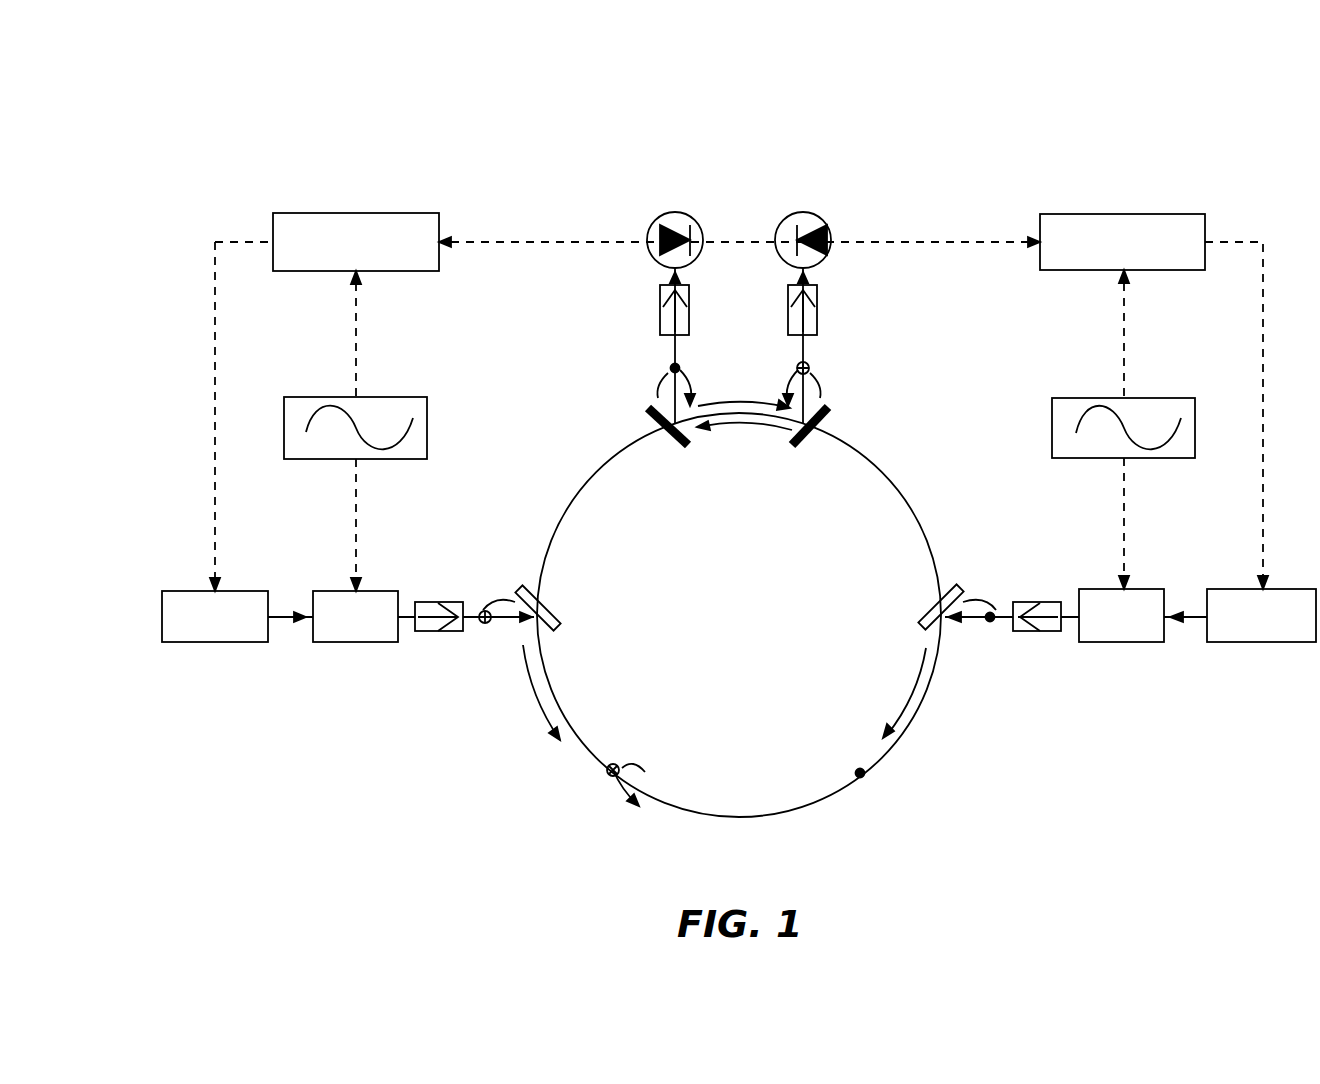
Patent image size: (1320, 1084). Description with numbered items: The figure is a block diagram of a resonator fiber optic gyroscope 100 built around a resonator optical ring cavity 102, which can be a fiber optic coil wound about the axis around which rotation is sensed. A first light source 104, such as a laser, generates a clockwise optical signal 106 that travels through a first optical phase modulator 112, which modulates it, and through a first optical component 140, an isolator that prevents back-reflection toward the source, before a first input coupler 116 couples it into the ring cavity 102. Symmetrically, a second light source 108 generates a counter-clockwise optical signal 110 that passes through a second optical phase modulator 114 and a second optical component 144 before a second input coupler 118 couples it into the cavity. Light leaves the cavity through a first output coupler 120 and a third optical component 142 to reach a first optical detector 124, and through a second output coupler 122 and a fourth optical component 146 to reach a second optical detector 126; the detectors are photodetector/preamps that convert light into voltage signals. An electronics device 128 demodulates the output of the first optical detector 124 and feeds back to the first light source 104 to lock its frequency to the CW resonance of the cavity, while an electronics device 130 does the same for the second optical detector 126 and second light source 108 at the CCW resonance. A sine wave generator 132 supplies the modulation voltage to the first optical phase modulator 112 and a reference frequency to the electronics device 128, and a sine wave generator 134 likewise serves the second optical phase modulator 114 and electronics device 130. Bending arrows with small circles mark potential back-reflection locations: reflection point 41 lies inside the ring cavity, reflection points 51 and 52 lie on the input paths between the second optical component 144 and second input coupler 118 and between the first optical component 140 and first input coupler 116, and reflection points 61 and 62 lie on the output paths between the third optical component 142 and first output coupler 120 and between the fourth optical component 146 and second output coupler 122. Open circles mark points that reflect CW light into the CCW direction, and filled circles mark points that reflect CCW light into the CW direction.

The resonator fiber optic gyroscope 100 is at (933, 160).
The resonator optical ring cavity 102 is at (920, 522).
The first light source 104 is at (1242, 642).
The clockwise (CW) optical signal 106 is at (1185, 625).
The second light source 108 is at (235, 642).
The counter-clockwise (CCW) optical signal 110 is at (297, 625).
The first optical phase modulator 112 is at (1097, 642).
The second optical phase modulator 114 is at (380, 642).
The first input coupler 116 is at (962, 592).
The second input coupler 118 is at (525, 588).
The first output coupler 120 is at (810, 440).
The second output coupler 122 is at (668, 443).
The first optical detector 124 is at (830, 228).
The second optical detector 126 is at (648, 228).
The electronics device 128 is at (1103, 214).
The electronics device 130 is at (377, 213).
The sine wave generator 132 is at (1080, 398).
The sine wave generator 134 is at (400, 397).
The first optical component 140 is at (1025, 631).
The third optical component 142 is at (817, 323).
The second optical component 144 is at (453, 631).
The fourth optical component 146 is at (660, 323).
The reflection point 41 is at (610, 772).
The reflection point 51 is at (512, 633).
The reflection point 52 is at (1000, 657).
The reflection point 61 is at (810, 368).
The reflection point 62 is at (668, 368).